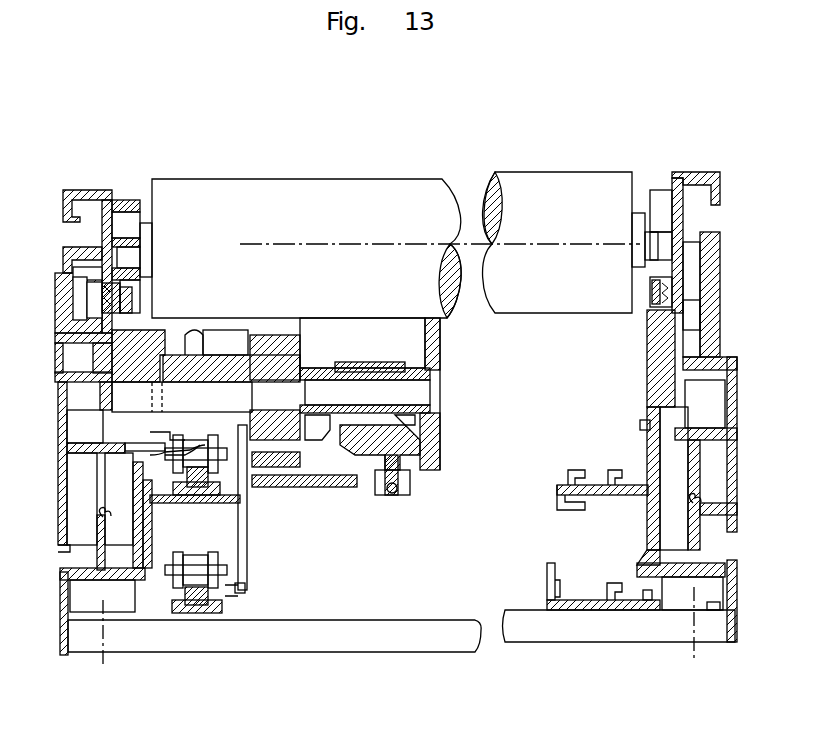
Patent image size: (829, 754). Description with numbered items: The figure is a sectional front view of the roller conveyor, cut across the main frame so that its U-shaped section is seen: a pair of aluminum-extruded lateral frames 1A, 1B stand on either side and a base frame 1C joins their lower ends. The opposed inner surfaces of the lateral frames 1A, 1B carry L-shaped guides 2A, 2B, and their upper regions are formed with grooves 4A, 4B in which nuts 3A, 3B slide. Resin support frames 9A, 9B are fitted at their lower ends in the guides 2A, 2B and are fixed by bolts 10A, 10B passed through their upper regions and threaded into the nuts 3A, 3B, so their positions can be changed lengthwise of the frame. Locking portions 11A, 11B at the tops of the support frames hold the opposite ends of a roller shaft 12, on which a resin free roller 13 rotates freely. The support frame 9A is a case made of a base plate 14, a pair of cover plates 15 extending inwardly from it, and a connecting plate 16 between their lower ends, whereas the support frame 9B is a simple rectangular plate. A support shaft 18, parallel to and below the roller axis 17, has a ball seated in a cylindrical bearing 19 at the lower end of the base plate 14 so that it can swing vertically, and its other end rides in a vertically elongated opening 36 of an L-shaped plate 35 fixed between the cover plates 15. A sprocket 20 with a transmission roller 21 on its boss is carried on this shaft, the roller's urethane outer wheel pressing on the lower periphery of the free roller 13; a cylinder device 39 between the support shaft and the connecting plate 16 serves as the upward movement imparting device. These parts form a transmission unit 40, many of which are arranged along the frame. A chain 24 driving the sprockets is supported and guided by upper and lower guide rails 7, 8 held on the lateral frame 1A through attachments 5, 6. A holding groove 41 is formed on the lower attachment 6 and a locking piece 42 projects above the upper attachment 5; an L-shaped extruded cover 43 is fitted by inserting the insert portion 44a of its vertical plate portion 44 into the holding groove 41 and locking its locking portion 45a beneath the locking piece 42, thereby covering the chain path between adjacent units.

The lateral frame 1A is at (68, 505).
The lateral frame 1B is at (735, 462).
The base frame 1C is at (400, 638).
The L-shaped guide 2A is at (130, 436).
The L-shaped guide 2B is at (645, 425).
The nut 3A is at (95, 302).
The nut 3B is at (695, 295).
The groove 4A is at (80, 282).
The groove 4B is at (690, 265).
The upper attachment 5 is at (145, 480).
The lower attachment 6 is at (160, 620).
The upper guide rail 7 is at (192, 498).
The lower guide rail 8 is at (205, 618).
The support frame 9A is at (100, 352).
The support frame 9B is at (700, 360).
The bolt 10A is at (128, 302).
The bolt 10B is at (656, 298).
The locking portion 11A is at (120, 215).
The locking portion 11B is at (665, 218).
The roller shaft 12 is at (650, 245).
The free roller 13 is at (505, 180).
The base plate 14 is at (130, 262).
The cover plates 15 is at (352, 330).
The connecting plate 16 is at (310, 487).
The roller axis 17 is at (270, 242).
The support shaft 18 is at (440, 390).
The cylindrical bearing 19 is at (90, 412).
The sprocket 20 is at (195, 335).
The transmission roller 21 is at (270, 465).
The chain 24 is at (245, 430).
The L-shaped plate 35 is at (430, 460).
The elongated opening 36 is at (440, 368).
The cylinder device 39 is at (390, 472).
The transmission unit 40 is at (416, 484).
The holding groove 41 is at (245, 600).
The locking piece 42 is at (150, 440).
The cover 43 is at (236, 532).
The vertical plate portion 44 is at (250, 542).
The insert portion 44a is at (265, 586).
The locking portion 45a is at (150, 462).